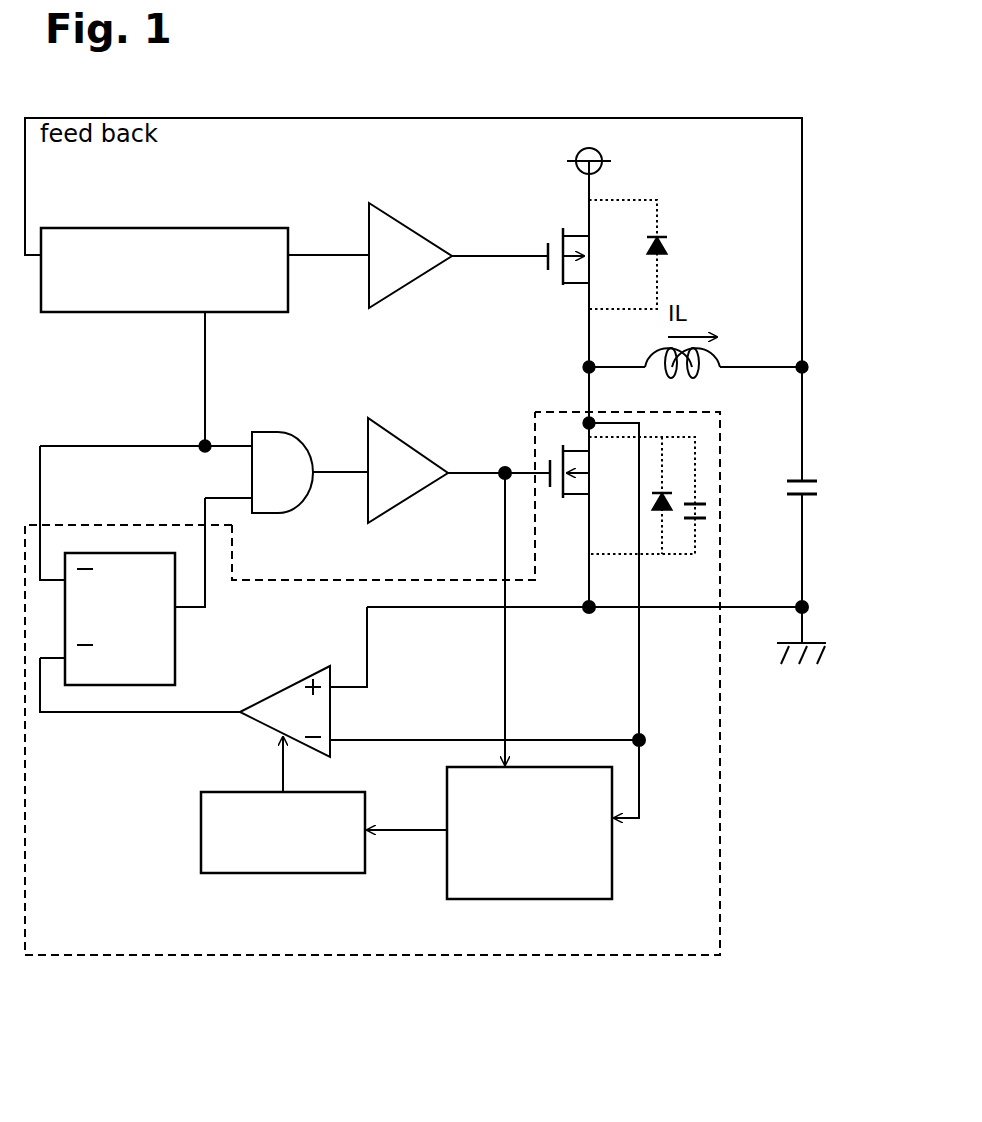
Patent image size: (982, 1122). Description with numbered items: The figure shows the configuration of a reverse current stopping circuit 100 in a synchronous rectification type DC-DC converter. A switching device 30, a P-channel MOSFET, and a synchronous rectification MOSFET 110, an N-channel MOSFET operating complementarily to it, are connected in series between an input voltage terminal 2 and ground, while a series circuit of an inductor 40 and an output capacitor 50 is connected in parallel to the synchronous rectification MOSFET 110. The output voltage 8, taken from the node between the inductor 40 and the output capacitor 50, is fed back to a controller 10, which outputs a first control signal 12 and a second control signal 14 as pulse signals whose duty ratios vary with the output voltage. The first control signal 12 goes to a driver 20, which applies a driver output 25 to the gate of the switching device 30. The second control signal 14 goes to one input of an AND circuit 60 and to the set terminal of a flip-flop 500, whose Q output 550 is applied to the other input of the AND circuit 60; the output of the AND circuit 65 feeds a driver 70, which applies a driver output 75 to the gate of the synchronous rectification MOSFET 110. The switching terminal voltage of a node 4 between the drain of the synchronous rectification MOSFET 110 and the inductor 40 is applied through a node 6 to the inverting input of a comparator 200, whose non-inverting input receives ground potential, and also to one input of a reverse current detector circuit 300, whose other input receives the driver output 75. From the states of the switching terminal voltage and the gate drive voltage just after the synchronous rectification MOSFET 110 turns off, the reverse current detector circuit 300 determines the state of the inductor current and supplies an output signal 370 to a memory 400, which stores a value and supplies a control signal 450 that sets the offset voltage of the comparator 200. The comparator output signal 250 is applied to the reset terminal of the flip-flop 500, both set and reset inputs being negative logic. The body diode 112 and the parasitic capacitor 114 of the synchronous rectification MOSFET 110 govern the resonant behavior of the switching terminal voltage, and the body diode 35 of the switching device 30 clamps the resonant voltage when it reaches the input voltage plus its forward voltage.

The input voltage terminal Vin 2 is at (603, 153).
The node 4 is at (592, 360).
The node 6 is at (582, 419).
The output voltage Vout 8 is at (808, 373).
The controller 10 is at (137, 227).
The first control signal 12 is at (328, 258).
The second control signal 14 is at (205, 375).
The driver 20 is at (398, 222).
The driver output Vgp 25 is at (510, 258).
The switching device Mp 30 is at (576, 263).
The body diode 35 is at (668, 244).
The inductor L 40 is at (705, 376).
The output capacitor Cout 50 is at (818, 486).
The AND circuit 60 is at (268, 432).
The output of the AND circuit 65 is at (330, 470).
The driver 70 is at (395, 437).
The driver output Vgn 75 is at (500, 478).
The reverse current stopping circuit 100 is at (721, 786).
The synchronous rectification MOSFET Mn 110 is at (571, 464).
The body diode 112 is at (650, 505).
The parasitic capacitor 114 is at (688, 522).
The comparator 200 is at (278, 690).
The output signal 250 is at (135, 713).
The reverse current detector circuit 300 is at (540, 900).
The output signal 370 is at (405, 833).
The memory 400 is at (275, 874).
The control signal Vctrl 450 is at (278, 760).
The flip-flop 500 is at (122, 552).
The Q output 550 is at (207, 557).